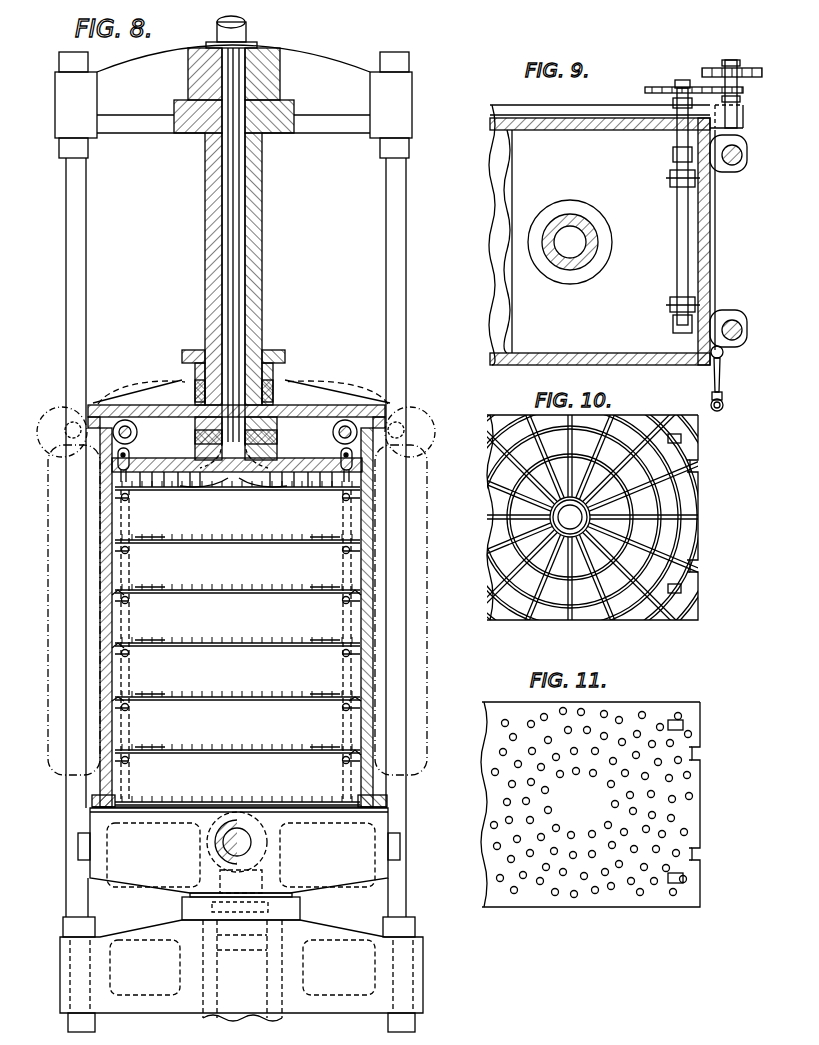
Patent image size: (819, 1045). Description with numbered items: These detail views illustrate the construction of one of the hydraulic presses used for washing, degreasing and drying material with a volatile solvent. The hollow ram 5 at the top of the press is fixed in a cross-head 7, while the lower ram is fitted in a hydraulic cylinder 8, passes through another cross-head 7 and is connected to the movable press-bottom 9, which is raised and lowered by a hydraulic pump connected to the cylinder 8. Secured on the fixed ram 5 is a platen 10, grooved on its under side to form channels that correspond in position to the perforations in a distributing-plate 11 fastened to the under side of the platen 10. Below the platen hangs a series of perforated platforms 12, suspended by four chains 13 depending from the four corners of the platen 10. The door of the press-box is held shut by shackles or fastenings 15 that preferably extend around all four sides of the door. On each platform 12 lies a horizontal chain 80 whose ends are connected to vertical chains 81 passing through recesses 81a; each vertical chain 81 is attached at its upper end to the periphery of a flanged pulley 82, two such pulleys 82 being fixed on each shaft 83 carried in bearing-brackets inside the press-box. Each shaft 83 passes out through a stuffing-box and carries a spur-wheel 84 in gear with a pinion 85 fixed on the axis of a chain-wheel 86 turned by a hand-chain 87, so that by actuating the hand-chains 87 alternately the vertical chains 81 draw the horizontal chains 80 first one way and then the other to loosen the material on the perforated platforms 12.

In FIG. 8, the ram 5 is at (233, 267).
In FIG. 9, the ram 5 is at (570, 242).
In FIG. 8, the cross-head 7 is at (239, 529).
In FIG. 9, the cross-head 7 is at (618, 235).
In FIG. 8, the hydraulic cylinder 8 is at (284, 1025).
In FIG. 8, the movable press-bottom 9 is at (239, 864).
In FIG. 8, the platen 10 is at (237, 466).
In FIG. 10, the platen 10 is at (690, 522).
In FIG. 8, the distributing-plate 11 is at (268, 492).
In FIG. 11, the distributing-plate 11 is at (590, 804).
In FIG. 8, the perforated platform 12 is at (237, 669).
In FIG. 8, the chain 13 is at (122, 562).
In FIG. 10, the chain 13 is at (681, 440).
In FIG. 11, the chain 13 is at (683, 727).
In FIG. 9, the shackle 15 is at (720, 373).
In FIG. 8, the horizontal chain 80 is at (237, 645).
In FIG. 8, the vertical chain 81 is at (114, 632).
In FIG. 10, the recess 81a is at (698, 467).
In FIG. 11, the recess 81a is at (700, 756).
In FIG. 8, the flanged pulley 82 is at (235, 428).
In FIG. 9, the flanged pulley 82 is at (672, 180).
In FIG. 8, the shaft 83 is at (130, 452).
In FIG. 9, the shaft 83 is at (676, 202).
In FIG. 8, the spur-wheel 84 is at (170, 395).
In FIG. 9, the spur-wheel 84 is at (652, 87).
In FIG. 8, the pinion 85 is at (58, 418).
In FIG. 9, the pinion 85 is at (740, 93).
In FIG. 8, the chain-wheel 86 is at (52, 435).
In FIG. 9, the chain-wheel 86 is at (744, 68).
In FIG. 8, the hand-chain 87 is at (238, 610).